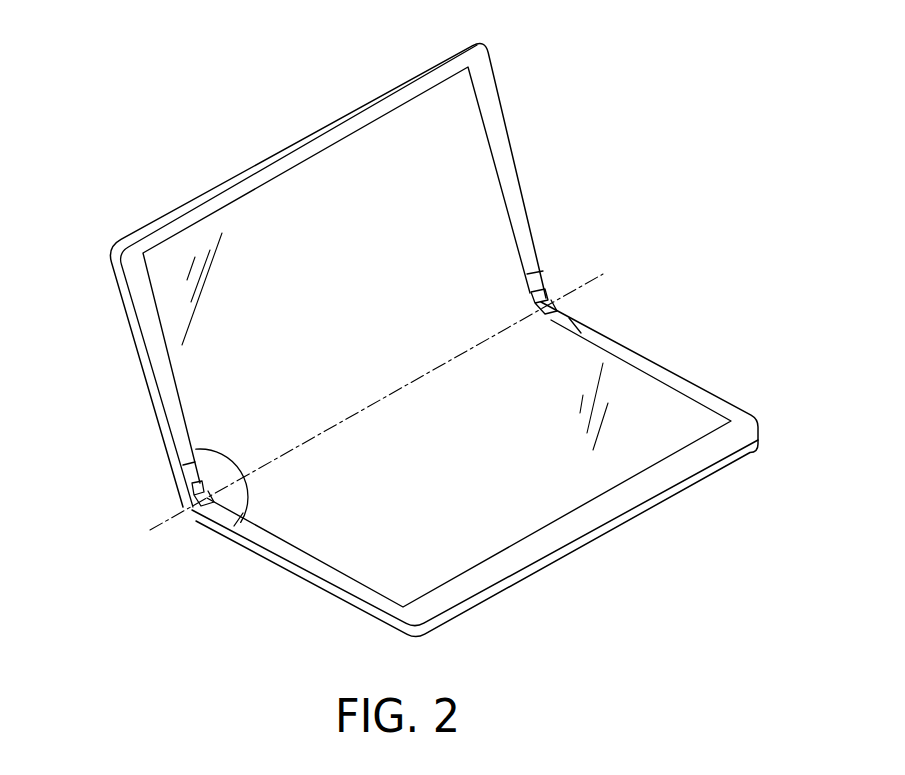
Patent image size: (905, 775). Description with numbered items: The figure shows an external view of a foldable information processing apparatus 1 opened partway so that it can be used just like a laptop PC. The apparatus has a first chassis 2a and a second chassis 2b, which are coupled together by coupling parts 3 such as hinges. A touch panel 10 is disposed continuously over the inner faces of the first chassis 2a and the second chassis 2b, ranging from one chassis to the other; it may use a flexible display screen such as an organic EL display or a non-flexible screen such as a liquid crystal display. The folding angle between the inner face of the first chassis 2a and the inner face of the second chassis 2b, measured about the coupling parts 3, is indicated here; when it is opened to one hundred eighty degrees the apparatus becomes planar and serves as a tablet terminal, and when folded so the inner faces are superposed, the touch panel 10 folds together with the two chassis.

The information processing apparatus 1 is at (423, 339).
The first chassis 2a is at (163, 355).
The second chassis 2b is at (305, 567).
The coupling parts 3 is at (205, 518).
The touch panel 10 is at (446, 440).